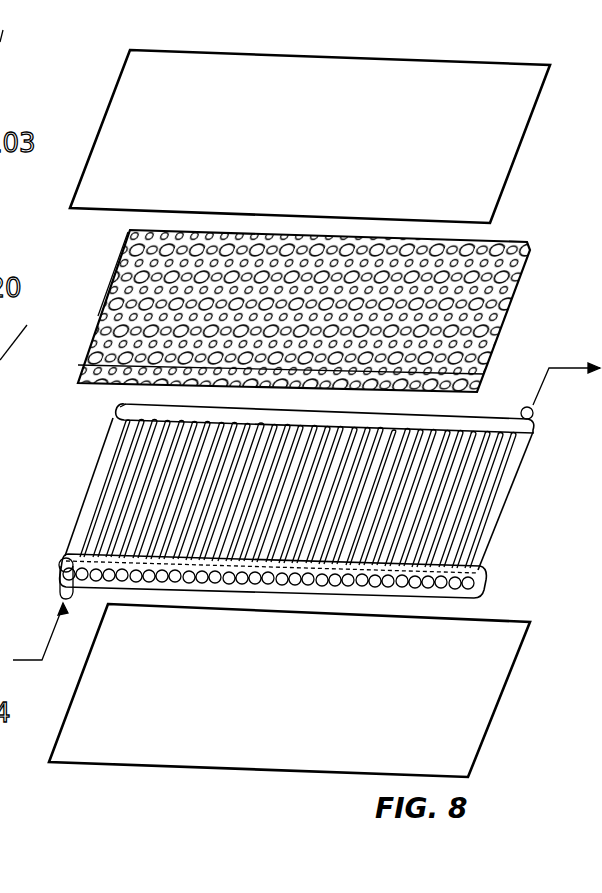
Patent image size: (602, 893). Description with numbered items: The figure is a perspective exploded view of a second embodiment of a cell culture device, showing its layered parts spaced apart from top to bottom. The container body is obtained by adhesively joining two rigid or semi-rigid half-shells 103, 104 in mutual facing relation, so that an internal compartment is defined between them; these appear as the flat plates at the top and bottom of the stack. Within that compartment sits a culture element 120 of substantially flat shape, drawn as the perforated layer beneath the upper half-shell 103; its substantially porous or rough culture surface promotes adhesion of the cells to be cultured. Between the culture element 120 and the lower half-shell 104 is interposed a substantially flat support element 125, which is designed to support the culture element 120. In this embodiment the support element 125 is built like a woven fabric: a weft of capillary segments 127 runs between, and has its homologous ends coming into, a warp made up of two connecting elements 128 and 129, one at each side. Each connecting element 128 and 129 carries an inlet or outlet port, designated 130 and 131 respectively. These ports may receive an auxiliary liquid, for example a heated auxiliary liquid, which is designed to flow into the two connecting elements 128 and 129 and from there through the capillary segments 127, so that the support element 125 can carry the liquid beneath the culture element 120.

The half-shell 103 is at (478, 172).
The half-shell 104 is at (457, 740).
The culture element 120 is at (85, 345).
The support element 125 is at (281, 311).
The capillary segments 127 is at (117, 497).
The connecting element 128 is at (118, 419).
The connecting element 129 is at (372, 583).
The inlet or outlet port 130 is at (57, 583).
The inlet or outlet port 131 is at (537, 427).